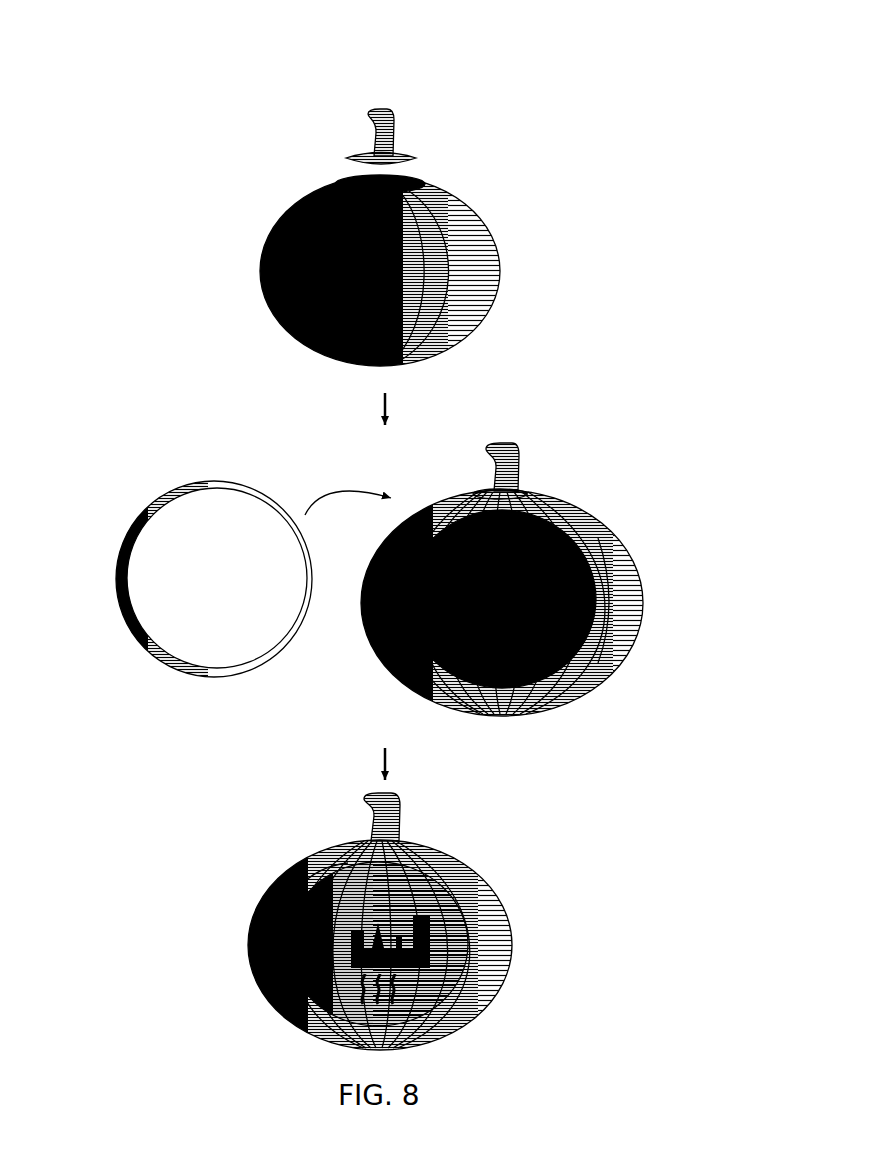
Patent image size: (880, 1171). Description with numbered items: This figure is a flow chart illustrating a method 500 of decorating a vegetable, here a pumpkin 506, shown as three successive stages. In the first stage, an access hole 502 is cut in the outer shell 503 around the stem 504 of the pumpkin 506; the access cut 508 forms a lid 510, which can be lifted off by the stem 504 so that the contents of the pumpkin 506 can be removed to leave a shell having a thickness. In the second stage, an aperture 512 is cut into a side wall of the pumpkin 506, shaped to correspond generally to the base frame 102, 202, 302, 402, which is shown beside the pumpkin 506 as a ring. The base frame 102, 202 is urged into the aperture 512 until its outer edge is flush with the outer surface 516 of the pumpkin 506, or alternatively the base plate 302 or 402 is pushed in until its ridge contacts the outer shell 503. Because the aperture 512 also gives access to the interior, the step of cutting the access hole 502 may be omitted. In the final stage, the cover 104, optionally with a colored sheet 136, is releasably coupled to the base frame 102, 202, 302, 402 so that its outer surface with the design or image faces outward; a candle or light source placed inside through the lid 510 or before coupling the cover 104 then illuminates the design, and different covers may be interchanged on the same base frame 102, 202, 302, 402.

The method of decorating a vegetable 500 is at (143, 201).
The access hole 502 is at (407, 168).
The outer shell 503 is at (605, 597).
The stem 504 is at (377, 67).
The pumpkin 506 is at (488, 229).
The access cut 508 is at (338, 165).
The lid 510 is at (477, 480).
The aperture 512 is at (587, 560).
The outer surface 516 is at (366, 643).
The base frame 102 is at (276, 746).
The base frame 202 is at (276, 746).
The base plate 302 is at (276, 746).
The base plate 402 is at (207, 1022).
The cover 104 is at (302, 850).
The colored sheet 136 is at (418, 912).